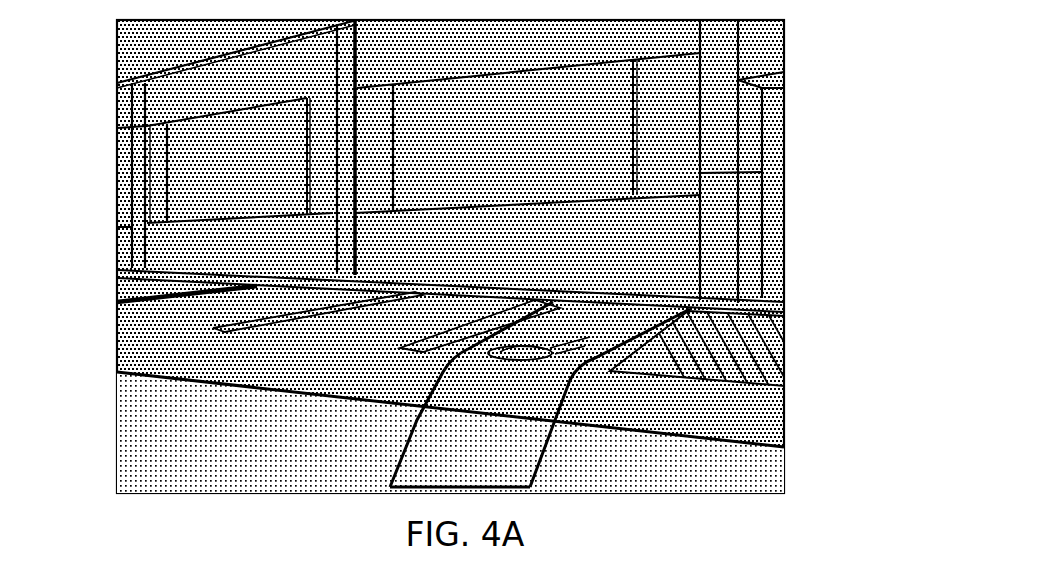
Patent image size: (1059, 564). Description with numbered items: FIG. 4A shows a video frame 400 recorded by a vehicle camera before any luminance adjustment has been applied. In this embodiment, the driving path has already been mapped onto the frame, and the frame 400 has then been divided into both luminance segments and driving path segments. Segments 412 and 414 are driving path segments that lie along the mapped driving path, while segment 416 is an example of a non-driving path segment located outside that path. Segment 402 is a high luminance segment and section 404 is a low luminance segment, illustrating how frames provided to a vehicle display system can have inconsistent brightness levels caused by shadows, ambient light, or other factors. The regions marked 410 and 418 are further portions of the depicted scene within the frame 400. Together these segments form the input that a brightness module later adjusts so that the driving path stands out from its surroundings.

The video frame 400 is at (94, 66).
The high luminance segment 402 is at (117, 430).
The low luminance segment 404 is at (784, 100).
The curb 410 is at (784, 305).
The driving path segment 412 is at (566, 360).
The driving path segment 414 is at (540, 394).
The non-driving path segment 416 is at (715, 387).
The left side region 418 is at (386, 373).